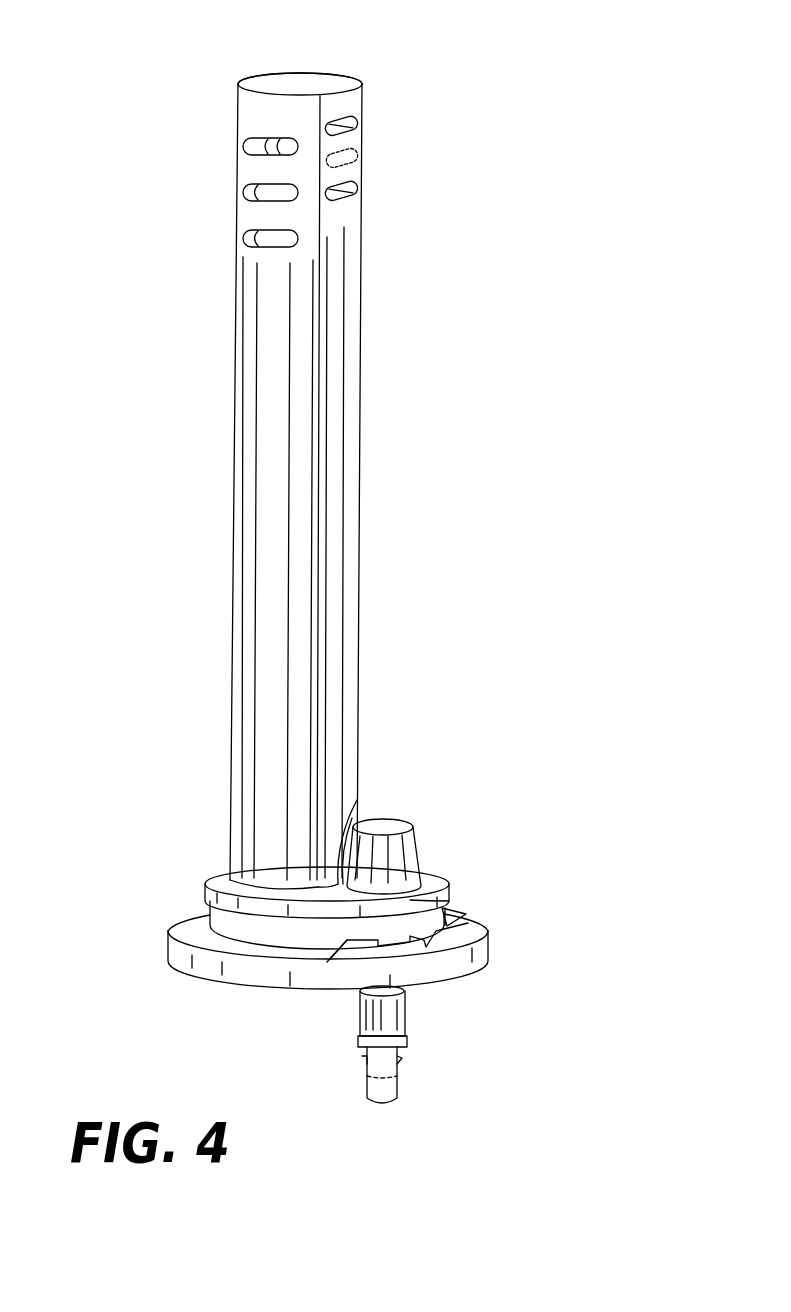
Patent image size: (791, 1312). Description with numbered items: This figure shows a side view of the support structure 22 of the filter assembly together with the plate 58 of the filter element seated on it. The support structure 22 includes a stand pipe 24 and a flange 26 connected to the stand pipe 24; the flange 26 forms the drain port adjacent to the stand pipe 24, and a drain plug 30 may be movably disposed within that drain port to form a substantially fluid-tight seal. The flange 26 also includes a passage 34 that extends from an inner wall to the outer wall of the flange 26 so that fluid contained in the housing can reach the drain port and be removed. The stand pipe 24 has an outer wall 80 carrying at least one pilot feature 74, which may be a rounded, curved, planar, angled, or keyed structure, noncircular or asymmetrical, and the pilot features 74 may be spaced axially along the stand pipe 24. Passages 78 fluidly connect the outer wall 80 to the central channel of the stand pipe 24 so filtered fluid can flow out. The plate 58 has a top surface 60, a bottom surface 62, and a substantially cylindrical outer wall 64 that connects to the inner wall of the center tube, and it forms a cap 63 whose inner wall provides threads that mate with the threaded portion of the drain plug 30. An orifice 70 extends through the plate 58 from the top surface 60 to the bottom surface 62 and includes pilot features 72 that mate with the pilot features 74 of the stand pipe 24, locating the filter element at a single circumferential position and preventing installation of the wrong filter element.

The support structure 22 is at (534, 126).
The stand pipe 24 is at (412, 292).
The flange 26 is at (157, 988).
The drain plug 30 is at (405, 1013).
The passage 34 is at (478, 930).
The plate 58 is at (192, 862).
The top surface 60 is at (440, 880).
The bottom surface 62 is at (205, 916).
The cap 63 is at (412, 826).
The outer wall 64 is at (448, 888).
The orifice 70 is at (218, 845).
The pilot feature 72 is at (357, 803).
The pilot feature 74 is at (263, 73).
The passage 78 is at (347, 142).
The outer wall 80 is at (330, 481).